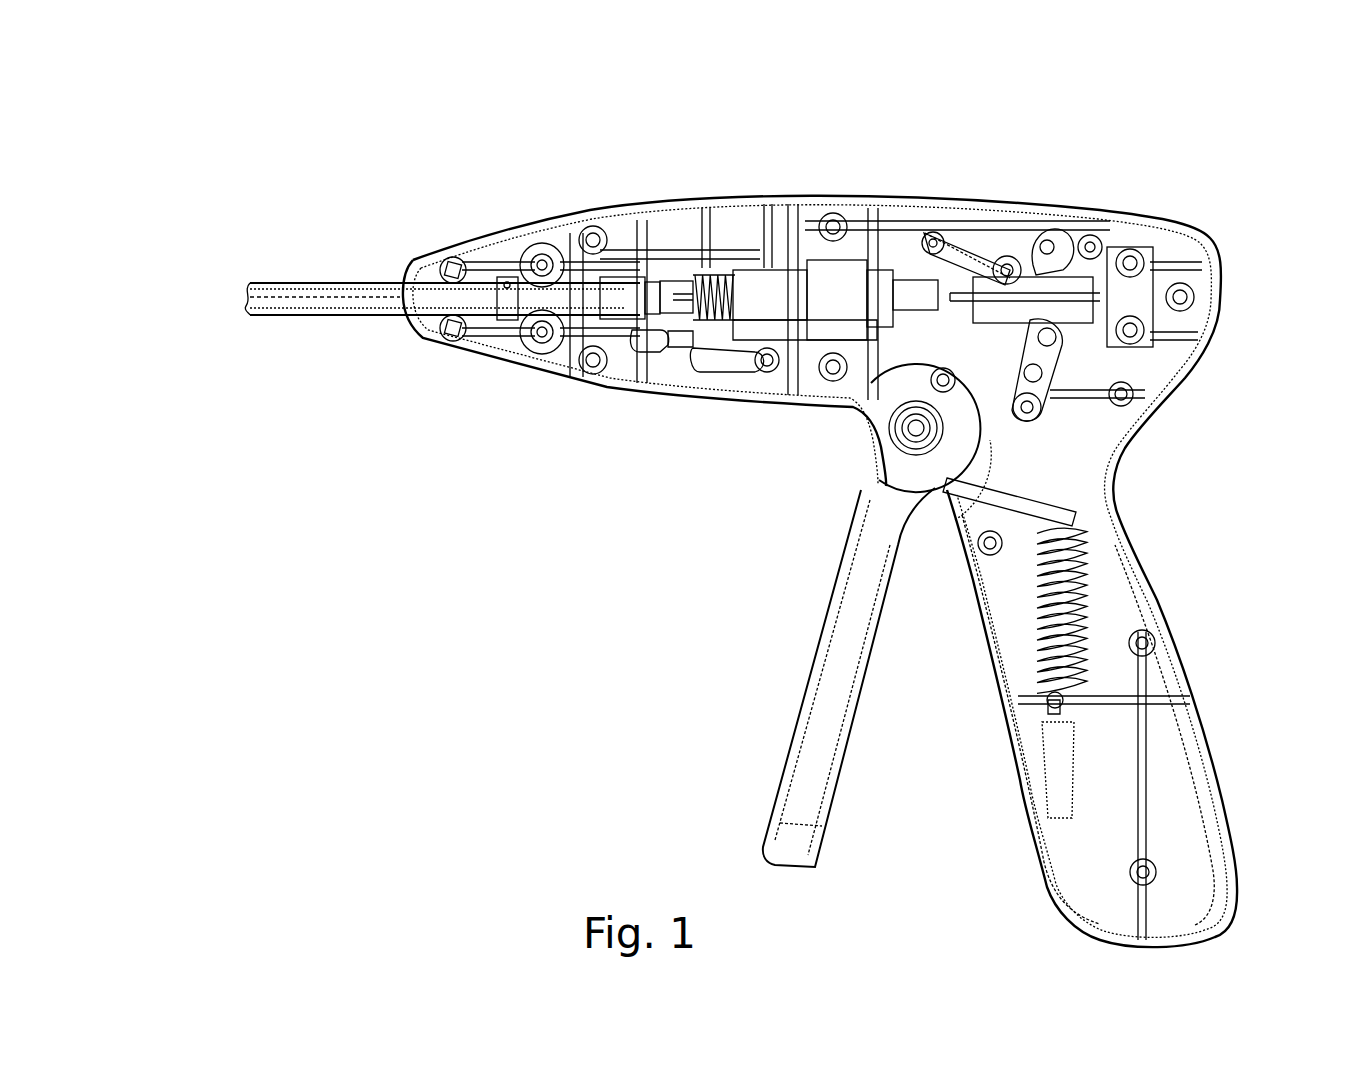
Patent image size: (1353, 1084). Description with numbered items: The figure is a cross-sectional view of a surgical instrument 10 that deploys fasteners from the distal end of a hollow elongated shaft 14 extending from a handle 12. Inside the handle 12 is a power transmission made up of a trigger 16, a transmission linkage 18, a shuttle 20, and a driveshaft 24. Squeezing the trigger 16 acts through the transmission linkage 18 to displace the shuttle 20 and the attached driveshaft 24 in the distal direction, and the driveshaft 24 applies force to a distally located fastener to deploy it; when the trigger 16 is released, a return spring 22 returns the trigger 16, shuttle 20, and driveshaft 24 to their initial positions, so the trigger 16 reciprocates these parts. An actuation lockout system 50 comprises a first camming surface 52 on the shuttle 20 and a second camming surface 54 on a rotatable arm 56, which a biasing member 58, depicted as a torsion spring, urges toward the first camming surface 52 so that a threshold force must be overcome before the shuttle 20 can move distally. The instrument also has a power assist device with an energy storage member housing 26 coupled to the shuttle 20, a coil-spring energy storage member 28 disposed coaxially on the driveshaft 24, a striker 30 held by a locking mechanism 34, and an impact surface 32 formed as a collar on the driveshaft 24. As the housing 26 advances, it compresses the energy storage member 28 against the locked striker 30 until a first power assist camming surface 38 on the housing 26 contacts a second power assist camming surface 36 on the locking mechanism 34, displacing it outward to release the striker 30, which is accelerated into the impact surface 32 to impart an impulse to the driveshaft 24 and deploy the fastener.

The surgical instrument 10 is at (290, 220).
The handle 12 is at (1210, 212).
The hollow elongated shaft 14 is at (284, 318).
The trigger 16 is at (815, 716).
The transmission linkage 18 is at (1052, 367).
The shuttle 20 is at (963, 297).
The return spring 22 is at (1050, 676).
The driveshaft 24 is at (376, 298).
The energy storage member housing 26 is at (765, 297).
The energy storage member 28 is at (715, 297).
The striker 30 is at (667, 297).
The impact surface 32 is at (632, 295).
The locking mechanism 34 is at (682, 355).
The second power assist camming surface 36 is at (660, 335).
The first power assist camming surface 38 is at (695, 338).
The actuation lockout system 50 is at (880, 113).
The first camming surface 52 is at (1018, 280).
The second camming surface 54 is at (1018, 280).
The arm 56 is at (968, 256).
The biasing member 58 is at (929, 223).